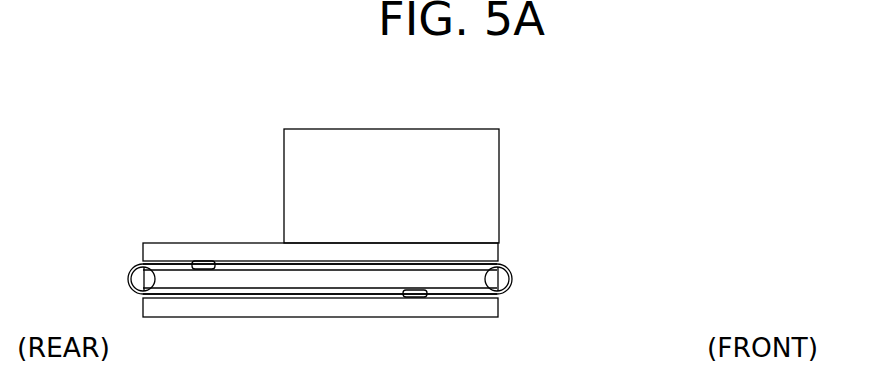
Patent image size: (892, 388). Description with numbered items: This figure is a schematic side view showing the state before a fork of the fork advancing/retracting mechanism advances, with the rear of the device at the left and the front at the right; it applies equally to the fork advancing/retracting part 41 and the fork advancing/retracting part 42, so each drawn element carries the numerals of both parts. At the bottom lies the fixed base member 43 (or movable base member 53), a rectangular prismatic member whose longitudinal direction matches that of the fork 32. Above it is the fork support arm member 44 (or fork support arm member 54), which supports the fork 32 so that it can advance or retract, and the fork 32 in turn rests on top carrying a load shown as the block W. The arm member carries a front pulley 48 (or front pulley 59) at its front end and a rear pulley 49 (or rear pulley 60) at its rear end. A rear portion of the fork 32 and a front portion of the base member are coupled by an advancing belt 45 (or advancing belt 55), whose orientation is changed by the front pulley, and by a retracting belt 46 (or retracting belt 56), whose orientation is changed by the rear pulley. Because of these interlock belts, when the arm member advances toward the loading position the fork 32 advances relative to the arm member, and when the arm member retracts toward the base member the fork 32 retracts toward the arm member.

The fork advancing/retracting part 41 is at (350, 232).
The fork advancing/retracting part 42 is at (235, 157).
The workpiece W is at (499, 164).
The fork 32 is at (236, 251).
The fixed base member 43 is at (320, 335).
The movable base member 53 is at (343, 308).
The fork support arm member 44 is at (352, 289).
The fork support arm member 54 is at (256, 280).
The advancing belt 45 is at (360, 238).
The advancing belt 55 is at (445, 268).
The retracting belt 46 is at (320, 330).
The retracting belt 56 is at (212, 293).
The front pulley 48 is at (553, 280).
The front pulley 59 is at (512, 280).
The rear pulley 49 is at (116, 254).
The rear pulley 60 is at (130, 279).